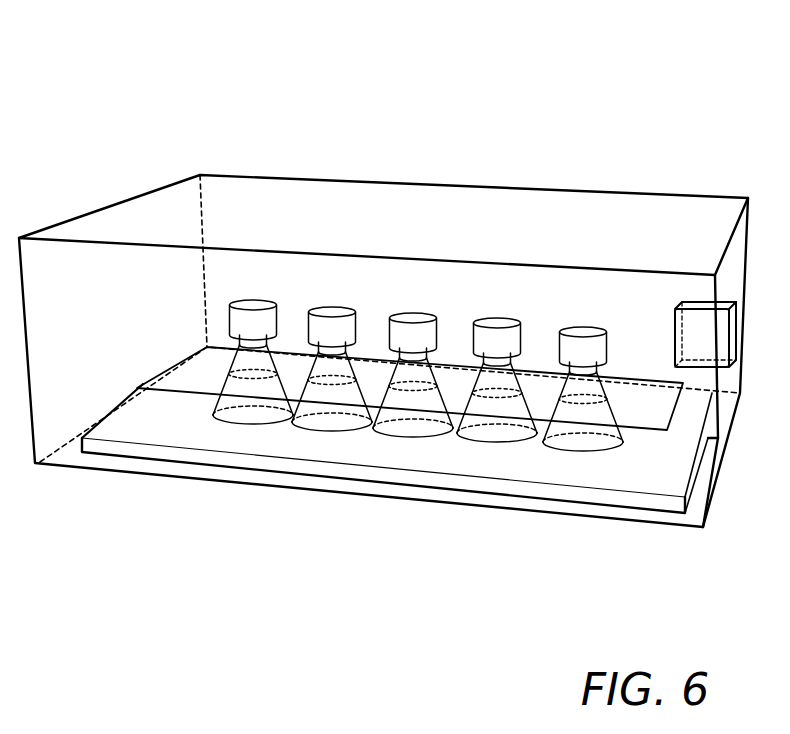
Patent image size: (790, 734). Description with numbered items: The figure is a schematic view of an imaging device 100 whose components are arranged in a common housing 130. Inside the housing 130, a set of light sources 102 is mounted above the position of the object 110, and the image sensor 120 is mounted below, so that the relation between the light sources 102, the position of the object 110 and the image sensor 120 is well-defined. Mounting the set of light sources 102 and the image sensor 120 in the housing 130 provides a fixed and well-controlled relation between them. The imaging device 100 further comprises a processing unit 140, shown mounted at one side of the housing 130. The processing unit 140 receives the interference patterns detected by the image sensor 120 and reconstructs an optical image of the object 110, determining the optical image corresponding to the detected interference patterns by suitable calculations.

The imaging device 100 is at (90, 104).
The set of light sources 102 is at (333, 313).
The object 110 is at (193, 393).
The image sensor 120 is at (352, 480).
The housing 130 is at (507, 210).
The processing unit 140 is at (692, 302).